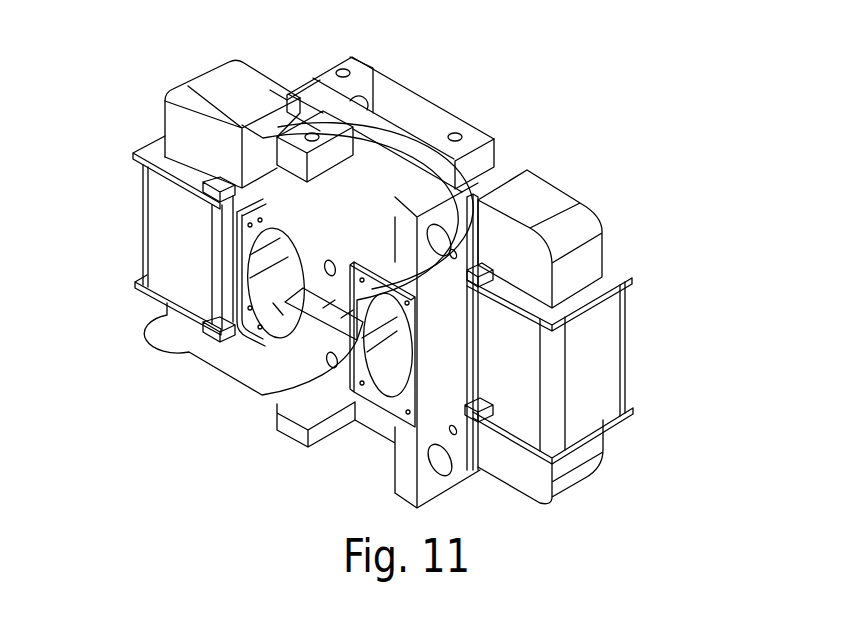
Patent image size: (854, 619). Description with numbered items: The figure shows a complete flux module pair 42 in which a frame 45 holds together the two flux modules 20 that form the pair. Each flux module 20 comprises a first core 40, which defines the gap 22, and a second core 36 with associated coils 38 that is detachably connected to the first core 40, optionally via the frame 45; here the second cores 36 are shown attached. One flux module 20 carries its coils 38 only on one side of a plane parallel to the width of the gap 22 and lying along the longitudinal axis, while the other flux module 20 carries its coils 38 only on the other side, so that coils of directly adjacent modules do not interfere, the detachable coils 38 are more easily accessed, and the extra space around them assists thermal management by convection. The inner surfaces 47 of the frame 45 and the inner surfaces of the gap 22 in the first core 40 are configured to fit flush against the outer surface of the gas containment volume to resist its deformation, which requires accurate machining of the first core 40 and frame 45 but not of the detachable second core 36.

The flux module 20 is at (158, 111).
The gap 22 is at (330, 292).
The second core 36 is at (247, 95).
The coils 38 is at (160, 242).
The first core 40 is at (274, 392).
The flux module pair 42 is at (620, 148).
The frame 45 is at (393, 143).
The inner surfaces 47 is at (277, 307).